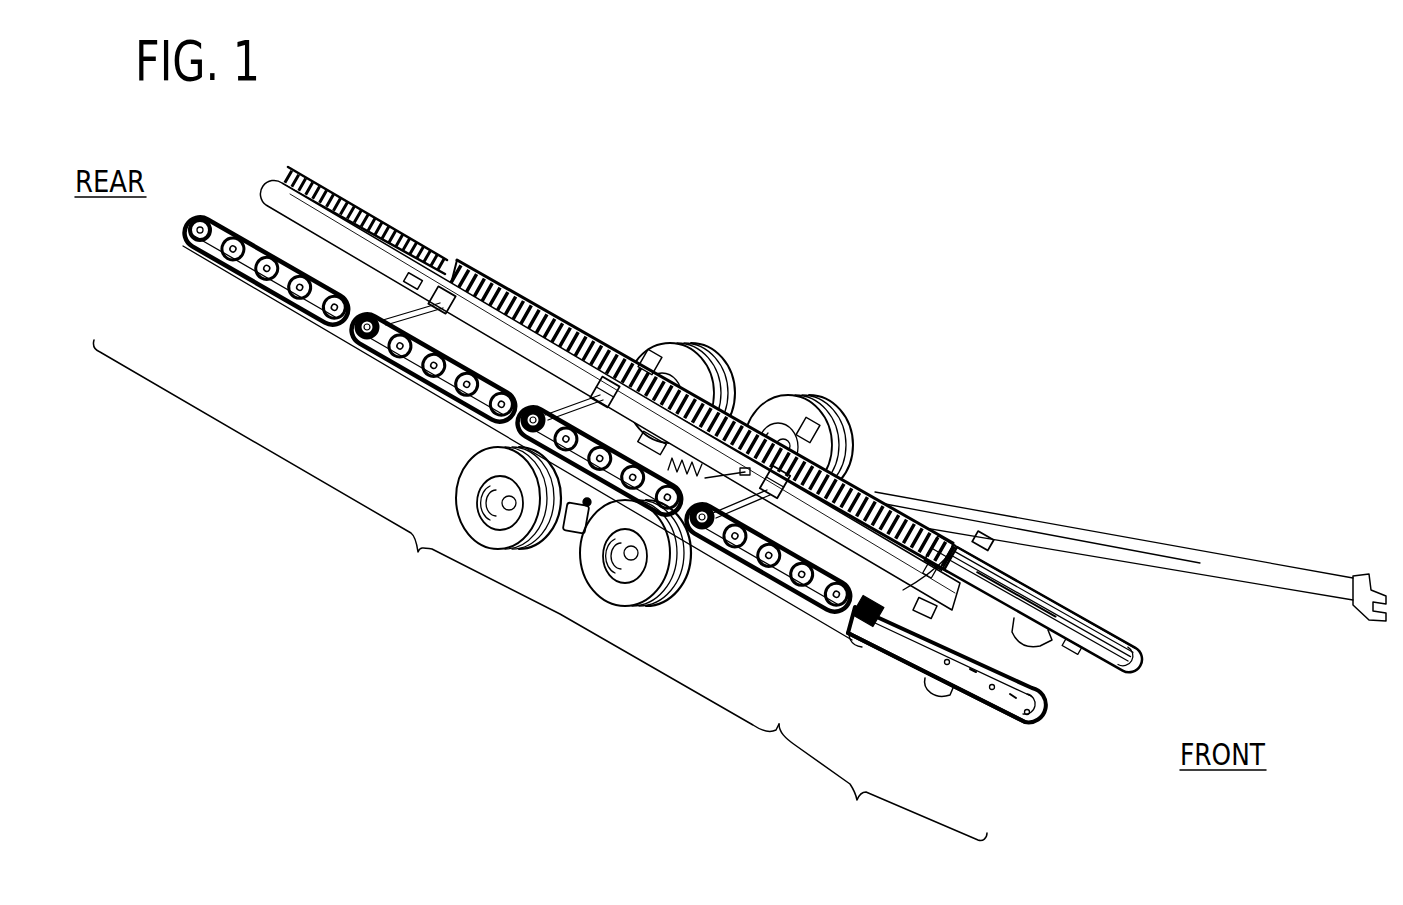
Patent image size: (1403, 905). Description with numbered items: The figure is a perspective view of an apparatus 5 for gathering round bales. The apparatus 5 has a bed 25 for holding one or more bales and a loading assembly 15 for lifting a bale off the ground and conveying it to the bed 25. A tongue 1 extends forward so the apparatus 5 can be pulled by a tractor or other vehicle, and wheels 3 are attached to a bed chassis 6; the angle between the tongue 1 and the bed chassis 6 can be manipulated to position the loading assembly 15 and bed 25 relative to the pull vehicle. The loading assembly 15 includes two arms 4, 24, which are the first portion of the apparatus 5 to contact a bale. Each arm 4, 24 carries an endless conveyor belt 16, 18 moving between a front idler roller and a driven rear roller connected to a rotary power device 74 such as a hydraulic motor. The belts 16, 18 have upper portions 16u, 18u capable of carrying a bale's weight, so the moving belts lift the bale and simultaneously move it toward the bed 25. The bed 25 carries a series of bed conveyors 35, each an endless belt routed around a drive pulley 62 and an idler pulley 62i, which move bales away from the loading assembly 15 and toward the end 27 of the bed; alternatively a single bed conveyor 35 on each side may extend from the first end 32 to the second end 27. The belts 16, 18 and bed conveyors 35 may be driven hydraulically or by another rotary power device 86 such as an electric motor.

The tongue 1 is at (1120, 540).
The wheels 3 is at (690, 353).
The arm 4 is at (1005, 725).
The apparatus for gathering round bales 5 is at (870, 287).
The bed chassis 6 is at (493, 330).
The loading assembly 15 is at (883, 785).
The endless conveyor belt 16 is at (1050, 717).
The upper portion 16u is at (955, 690).
The endless conveyor belt 18 is at (1143, 668).
The upper portion 18u is at (1050, 597).
The arm 24 is at (1107, 630).
The bed 25 is at (436, 535).
The end of the bed 27 is at (268, 185).
The first end 32 is at (968, 537).
The bed conveyors 35 is at (418, 270).
The drive pulley 62 is at (317, 322).
The idler pulley 62i is at (190, 248).
The rotary power device 74 is at (967, 563).
The rotary power device 86 is at (433, 288).